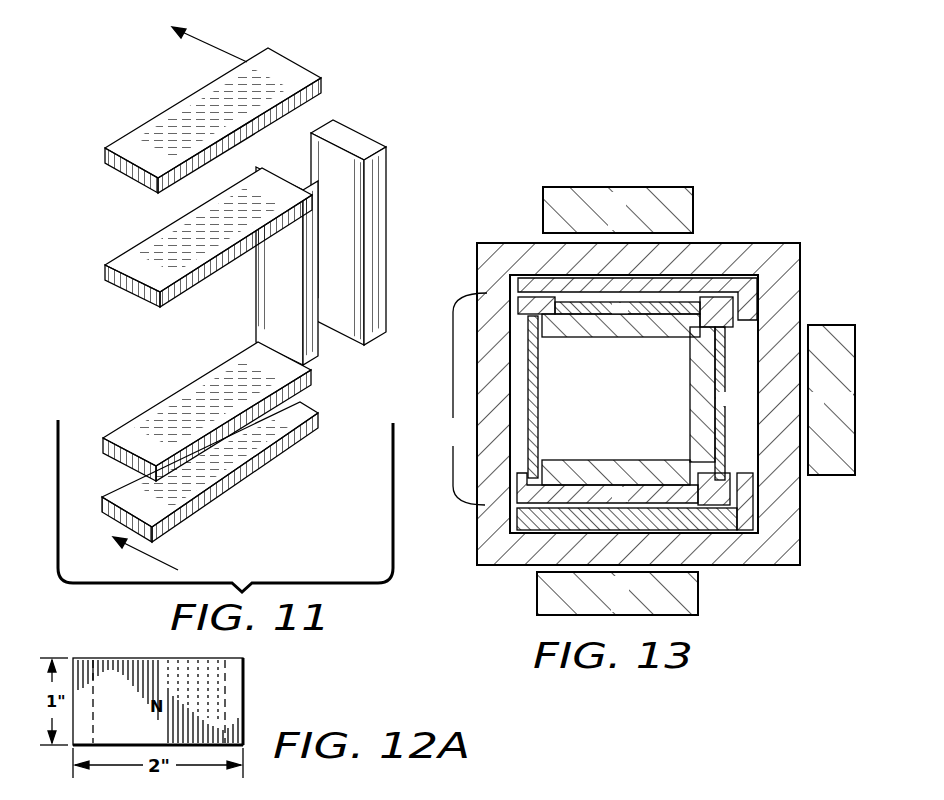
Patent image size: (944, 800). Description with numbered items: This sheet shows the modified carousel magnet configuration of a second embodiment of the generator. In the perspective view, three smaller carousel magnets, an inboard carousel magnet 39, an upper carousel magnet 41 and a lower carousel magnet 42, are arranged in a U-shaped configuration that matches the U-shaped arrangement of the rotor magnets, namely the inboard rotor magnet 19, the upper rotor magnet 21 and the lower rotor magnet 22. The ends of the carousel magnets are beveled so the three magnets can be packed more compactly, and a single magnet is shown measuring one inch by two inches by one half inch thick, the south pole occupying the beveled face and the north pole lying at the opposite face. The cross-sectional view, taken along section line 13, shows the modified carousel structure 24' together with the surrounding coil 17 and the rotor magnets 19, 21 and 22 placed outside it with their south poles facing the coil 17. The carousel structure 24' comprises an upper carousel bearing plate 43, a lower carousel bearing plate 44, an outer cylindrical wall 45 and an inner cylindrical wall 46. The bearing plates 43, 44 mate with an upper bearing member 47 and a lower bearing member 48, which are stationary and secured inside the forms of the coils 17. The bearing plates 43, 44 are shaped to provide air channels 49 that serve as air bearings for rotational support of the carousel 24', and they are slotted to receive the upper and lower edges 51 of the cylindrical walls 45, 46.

In FIG. 11, the section line 13 is at (214, 33).
In FIG. 13, the coil 17 is at (518, 242).
In FIG. 11, the inboard rotor magnet 19 is at (380, 182).
In FIG. 13, the inboard rotor magnet 19 is at (840, 326).
In FIG. 11, the upper rotor magnet 21 is at (297, 72).
In FIG. 13, the upper rotor magnet 21 is at (675, 195).
In FIG. 11, the lower rotor magnet 22 is at (287, 442).
In FIG. 13, the lower rotor magnet 22 is at (694, 598).
In FIG. 13, the modified carousel structure 24' is at (463, 399).
In FIG. 11, the inboard carousel magnet 39 is at (270, 307).
In FIG. 13, the inboard carousel magnet 39 is at (690, 352).
In FIG. 11, the upper carousel magnet 41 is at (133, 255).
In FIG. 13, the upper carousel magnet 41 is at (588, 338).
In FIG. 11, the lower carousel magnet 42 is at (142, 422).
In FIG. 13, the lower carousel magnet 42 is at (650, 462).
In FIG. 13, the upper carousel bearing plate 43 is at (520, 300).
In FIG. 13, the lower carousel bearing plate 44 is at (522, 488).
In FIG. 13, the outer cylindrical wall 45 is at (538, 405).
In FIG. 13, the inner cylindrical wall 46 is at (798, 343).
In FIG. 13, the upper bearing member 47 is at (725, 287).
In FIG. 13, the lower bearing member 48 is at (742, 531).
In FIG. 13, the air channels 49 is at (642, 300).
In FIG. 13, the upper and lower edges 51 is at (522, 337).